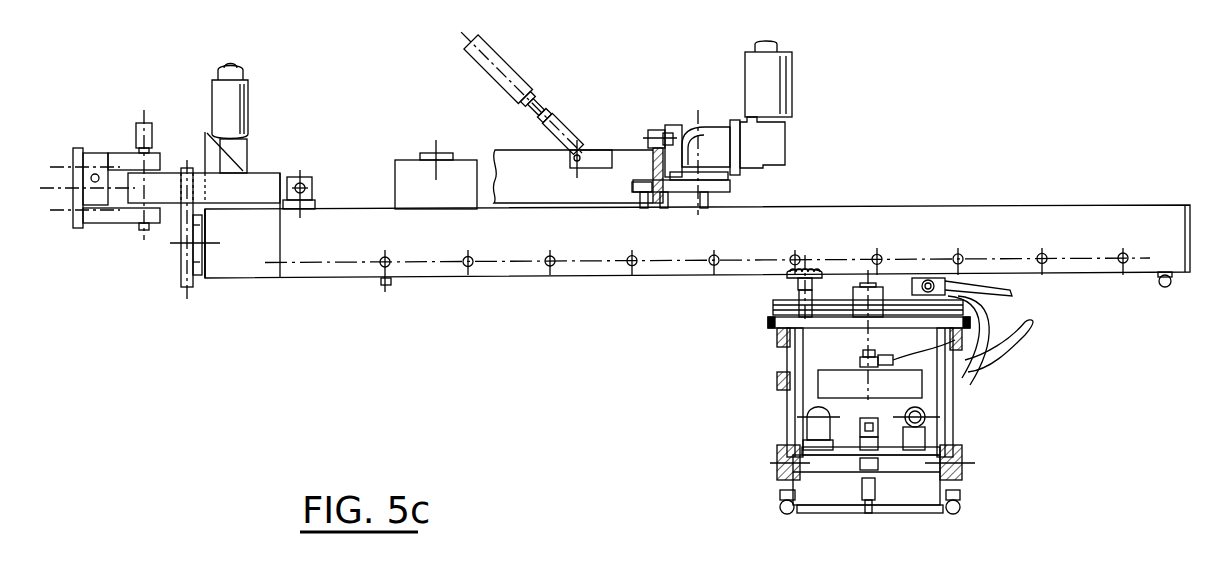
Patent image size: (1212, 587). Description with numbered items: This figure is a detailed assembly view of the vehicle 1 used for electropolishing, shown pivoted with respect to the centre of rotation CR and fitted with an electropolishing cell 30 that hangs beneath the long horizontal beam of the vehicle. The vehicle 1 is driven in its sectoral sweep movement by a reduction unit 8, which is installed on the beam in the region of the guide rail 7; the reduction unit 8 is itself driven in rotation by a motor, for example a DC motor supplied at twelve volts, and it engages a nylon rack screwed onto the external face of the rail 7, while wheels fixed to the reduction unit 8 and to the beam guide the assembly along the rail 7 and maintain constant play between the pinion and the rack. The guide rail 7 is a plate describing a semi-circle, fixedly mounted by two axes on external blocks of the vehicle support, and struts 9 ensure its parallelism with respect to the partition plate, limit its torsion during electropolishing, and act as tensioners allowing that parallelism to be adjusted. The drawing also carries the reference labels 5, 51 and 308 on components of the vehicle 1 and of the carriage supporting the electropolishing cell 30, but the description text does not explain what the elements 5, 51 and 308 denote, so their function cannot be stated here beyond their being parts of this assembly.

The vehicle 1 is at (594, 250).
The centre of rotation CR is at (142, 123).
The cylinder 5 is at (244, 102).
The struts 9 is at (493, 57).
The guide rail 7 is at (664, 130).
The reduction unit 8 is at (775, 137).
The adjusting knob 51 is at (787, 281).
The carriage rail assembly 308 is at (762, 300).
The electropolishing cell 30 is at (960, 440).